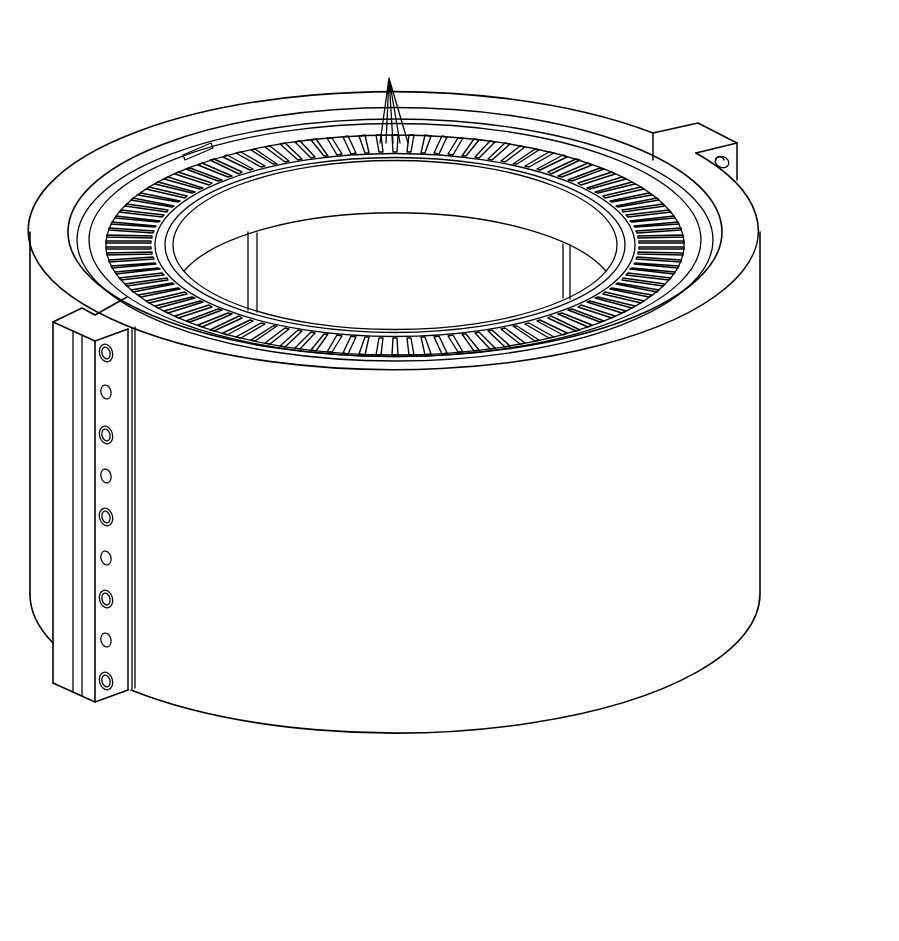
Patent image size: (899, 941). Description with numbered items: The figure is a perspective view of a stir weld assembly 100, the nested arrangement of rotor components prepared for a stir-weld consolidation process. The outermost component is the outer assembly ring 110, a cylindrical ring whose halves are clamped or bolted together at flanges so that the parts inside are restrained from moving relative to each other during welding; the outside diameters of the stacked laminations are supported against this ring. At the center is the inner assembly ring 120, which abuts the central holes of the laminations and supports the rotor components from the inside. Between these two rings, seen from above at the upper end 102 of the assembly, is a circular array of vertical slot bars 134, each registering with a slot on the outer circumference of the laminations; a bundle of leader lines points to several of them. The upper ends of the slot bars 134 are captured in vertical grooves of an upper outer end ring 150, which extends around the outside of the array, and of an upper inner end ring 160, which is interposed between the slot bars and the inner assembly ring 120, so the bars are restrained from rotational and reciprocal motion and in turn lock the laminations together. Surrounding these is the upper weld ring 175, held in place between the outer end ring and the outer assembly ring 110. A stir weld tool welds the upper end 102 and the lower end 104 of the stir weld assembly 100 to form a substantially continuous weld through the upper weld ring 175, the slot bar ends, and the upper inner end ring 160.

The stir weld assembly 100 is at (787, 92).
The upper end 102 is at (677, 222).
The lower end 104 is at (715, 662).
The outer assembly ring 110 is at (760, 414).
The inner assembly ring 120 is at (284, 183).
The slot bar 134 is at (389, 78).
The upper outer end ring 150 is at (567, 157).
The upper inner end ring 160 is at (161, 207).
The upper weld ring 175 is at (474, 133).